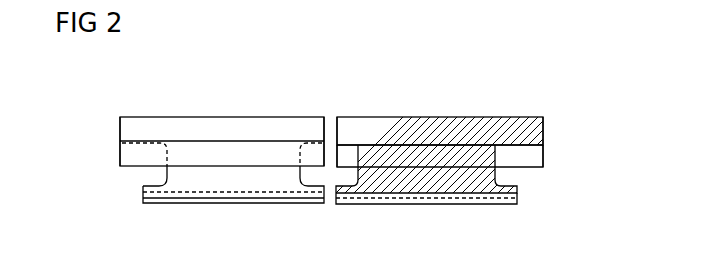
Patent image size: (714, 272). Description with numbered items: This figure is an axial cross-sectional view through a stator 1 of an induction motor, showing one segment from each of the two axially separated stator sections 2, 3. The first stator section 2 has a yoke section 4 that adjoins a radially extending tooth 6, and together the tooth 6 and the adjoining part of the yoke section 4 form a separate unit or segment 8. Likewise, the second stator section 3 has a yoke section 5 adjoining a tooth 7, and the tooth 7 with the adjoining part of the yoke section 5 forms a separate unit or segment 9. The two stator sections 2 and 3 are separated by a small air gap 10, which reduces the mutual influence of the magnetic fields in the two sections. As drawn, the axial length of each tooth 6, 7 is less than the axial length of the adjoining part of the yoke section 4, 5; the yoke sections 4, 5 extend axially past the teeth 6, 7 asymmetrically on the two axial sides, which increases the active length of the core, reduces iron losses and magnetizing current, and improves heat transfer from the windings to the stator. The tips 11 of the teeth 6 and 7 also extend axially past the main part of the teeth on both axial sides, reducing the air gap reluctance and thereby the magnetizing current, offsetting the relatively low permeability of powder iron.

The stator 1 is at (359, 68).
The stator section 2 is at (242, 113).
The stator section 3 is at (423, 112).
The yoke section 4 is at (112, 128).
The yoke section 5 is at (552, 133).
The tooth 6 is at (253, 178).
The tooth 7 is at (440, 181).
The segment 8 is at (132, 172).
The segment 9 is at (542, 182).
The air gap 10 is at (329, 112).
The tooth tip 11 is at (360, 206).